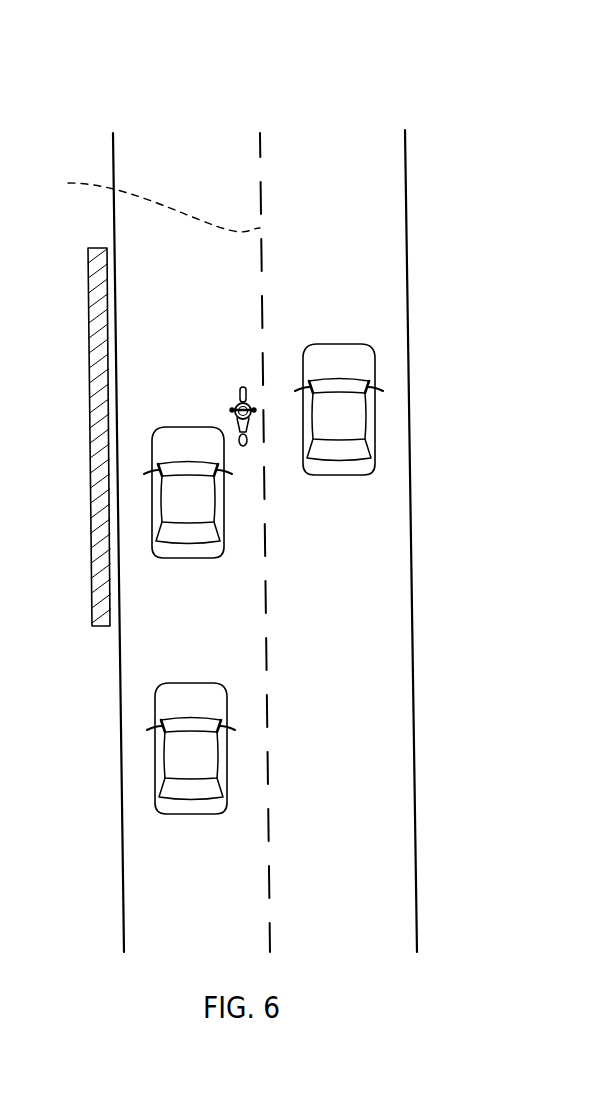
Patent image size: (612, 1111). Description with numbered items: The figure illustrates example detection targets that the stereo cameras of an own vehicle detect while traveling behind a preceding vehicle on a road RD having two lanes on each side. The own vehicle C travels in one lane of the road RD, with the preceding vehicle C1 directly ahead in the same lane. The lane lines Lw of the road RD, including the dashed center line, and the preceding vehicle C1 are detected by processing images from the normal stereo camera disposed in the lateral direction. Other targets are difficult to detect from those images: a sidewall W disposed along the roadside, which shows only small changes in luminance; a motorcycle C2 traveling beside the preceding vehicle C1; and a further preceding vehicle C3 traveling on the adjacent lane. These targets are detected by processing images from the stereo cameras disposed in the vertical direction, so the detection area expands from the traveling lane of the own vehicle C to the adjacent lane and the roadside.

The road RD is at (222, 98).
The lane lines Lw is at (114, 213).
The sidewall W is at (90, 382).
The preceding vehicle C1 is at (152, 528).
The motorcycle C2 is at (250, 430).
The preceding vehicle C3 is at (376, 436).
The own vehicle C is at (155, 753).